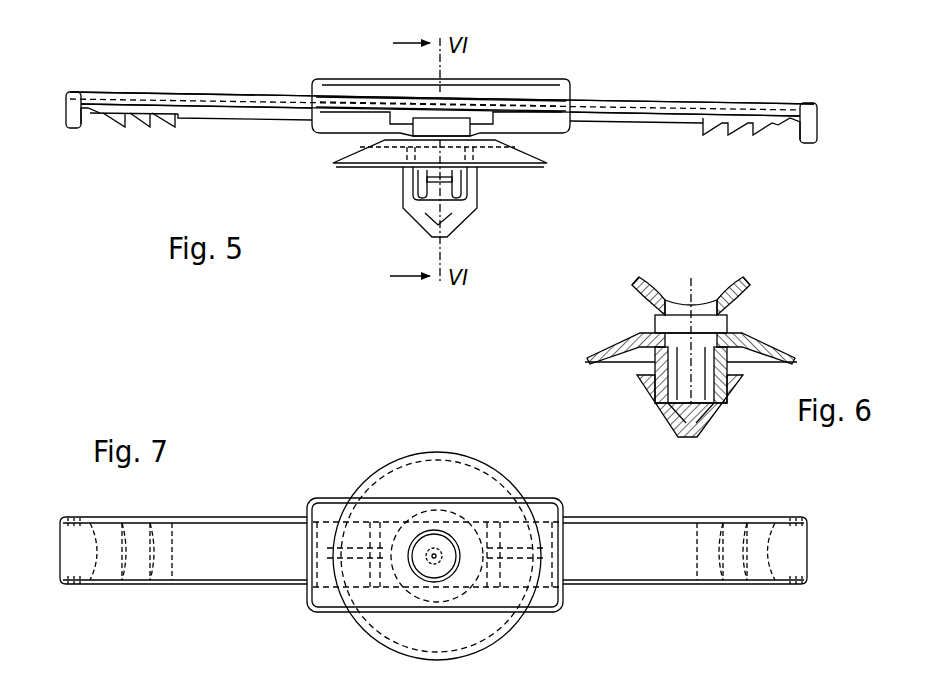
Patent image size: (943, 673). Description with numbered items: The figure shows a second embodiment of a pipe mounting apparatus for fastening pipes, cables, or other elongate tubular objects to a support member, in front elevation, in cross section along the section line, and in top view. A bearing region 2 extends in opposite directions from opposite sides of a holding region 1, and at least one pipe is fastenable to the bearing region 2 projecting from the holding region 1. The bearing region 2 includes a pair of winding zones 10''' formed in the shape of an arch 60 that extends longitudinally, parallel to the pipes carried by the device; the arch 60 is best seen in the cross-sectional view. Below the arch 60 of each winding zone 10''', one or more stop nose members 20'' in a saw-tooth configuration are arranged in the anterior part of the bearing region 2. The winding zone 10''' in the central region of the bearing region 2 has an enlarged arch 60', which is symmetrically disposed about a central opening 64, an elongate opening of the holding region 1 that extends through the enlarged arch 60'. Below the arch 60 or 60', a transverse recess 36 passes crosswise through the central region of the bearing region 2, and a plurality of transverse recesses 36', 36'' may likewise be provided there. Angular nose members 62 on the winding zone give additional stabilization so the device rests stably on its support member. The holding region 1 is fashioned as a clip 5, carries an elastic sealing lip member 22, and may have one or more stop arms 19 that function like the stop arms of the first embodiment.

In FIG. 5, the holding region 1 is at (393, 218).
In FIG. 6, the holding region 1 is at (722, 422).
In FIG. 5, the bearing region 2 is at (533, 76).
In FIG. 6, the bearing region 2 is at (762, 294).
In FIG. 5, the clip 5 is at (470, 196).
In FIG. 5, the winding zone 10''' is at (442, 62).
In FIG. 6, the winding zone 10''' is at (691, 267).
In FIG. 5, the stop arms 19 is at (445, 190).
In FIG. 6, the stop arms 19 is at (640, 380).
In FIG. 5, the stop nose member 20'' is at (434, 157).
In FIG. 7, the stop nose member 20'' is at (439, 586).
In FIG. 5, the elastic sealing lip member 22 is at (527, 168).
In FIG. 6, the elastic sealing lip member 22 is at (585, 362).
In FIG. 7, the elastic sealing lip member 22 is at (497, 477).
In FIG. 5, the transverse recess 36 is at (430, 95).
In FIG. 5, the transverse recess 36' is at (350, 148).
In FIG. 5, the transverse recess 36'' is at (535, 151).
In FIG. 5, the arch 60 is at (442, 82).
In FIG. 7, the arch 60 is at (433, 528).
In FIG. 5, the enlarged arch 60' is at (441, 75).
In FIG. 6, the enlarged arch 60' is at (691, 277).
In FIG. 7, the enlarged arch 60' is at (435, 530).
In FIG. 5, the angular nose member 62 is at (73, 130).
In FIG. 7, the angular nose member 62 is at (66, 586).
In FIG. 7, the central opening 64 is at (430, 573).